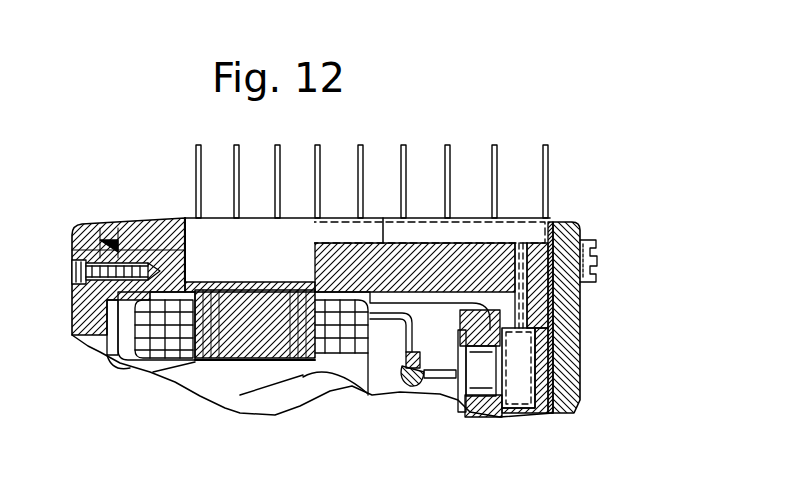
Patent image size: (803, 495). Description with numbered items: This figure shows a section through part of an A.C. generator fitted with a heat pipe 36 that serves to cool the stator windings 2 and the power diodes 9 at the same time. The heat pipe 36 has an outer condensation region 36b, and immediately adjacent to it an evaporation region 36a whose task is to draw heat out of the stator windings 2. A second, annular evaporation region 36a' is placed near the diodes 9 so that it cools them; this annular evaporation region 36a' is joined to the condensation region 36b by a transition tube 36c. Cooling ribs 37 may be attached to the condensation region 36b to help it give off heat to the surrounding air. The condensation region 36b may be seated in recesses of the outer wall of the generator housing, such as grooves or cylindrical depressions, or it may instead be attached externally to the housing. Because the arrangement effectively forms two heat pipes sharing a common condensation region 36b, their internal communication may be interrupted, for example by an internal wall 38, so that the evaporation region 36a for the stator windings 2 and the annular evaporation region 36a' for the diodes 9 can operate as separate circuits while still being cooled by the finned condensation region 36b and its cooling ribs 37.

The stator windings 2 is at (295, 348).
The diodes 9 is at (480, 383).
The heat pipe 36 is at (522, 216).
The evaporation region 36a is at (218, 232).
The annular evaporation region 36a' is at (572, 370).
The condensation region 36b is at (342, 228).
The transition tube 36c is at (521, 305).
The cooling ribs 37 is at (407, 158).
The internal wall 38 is at (385, 230).